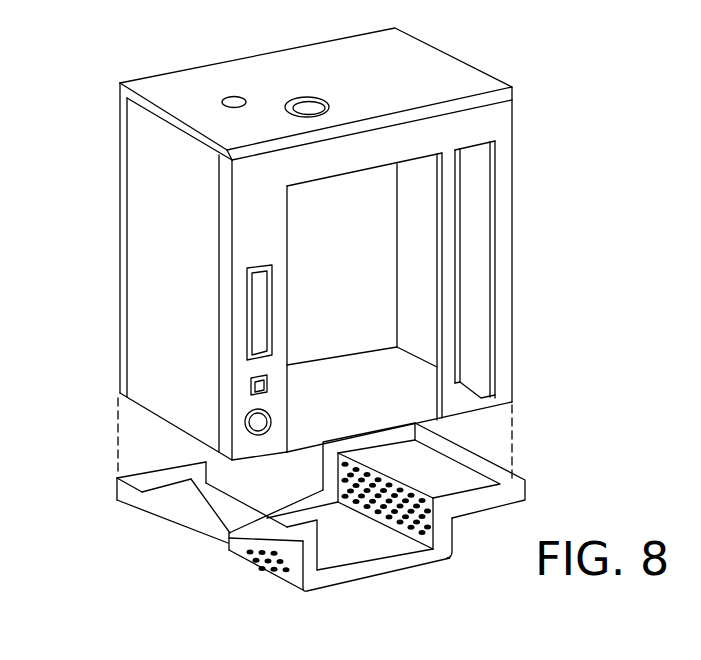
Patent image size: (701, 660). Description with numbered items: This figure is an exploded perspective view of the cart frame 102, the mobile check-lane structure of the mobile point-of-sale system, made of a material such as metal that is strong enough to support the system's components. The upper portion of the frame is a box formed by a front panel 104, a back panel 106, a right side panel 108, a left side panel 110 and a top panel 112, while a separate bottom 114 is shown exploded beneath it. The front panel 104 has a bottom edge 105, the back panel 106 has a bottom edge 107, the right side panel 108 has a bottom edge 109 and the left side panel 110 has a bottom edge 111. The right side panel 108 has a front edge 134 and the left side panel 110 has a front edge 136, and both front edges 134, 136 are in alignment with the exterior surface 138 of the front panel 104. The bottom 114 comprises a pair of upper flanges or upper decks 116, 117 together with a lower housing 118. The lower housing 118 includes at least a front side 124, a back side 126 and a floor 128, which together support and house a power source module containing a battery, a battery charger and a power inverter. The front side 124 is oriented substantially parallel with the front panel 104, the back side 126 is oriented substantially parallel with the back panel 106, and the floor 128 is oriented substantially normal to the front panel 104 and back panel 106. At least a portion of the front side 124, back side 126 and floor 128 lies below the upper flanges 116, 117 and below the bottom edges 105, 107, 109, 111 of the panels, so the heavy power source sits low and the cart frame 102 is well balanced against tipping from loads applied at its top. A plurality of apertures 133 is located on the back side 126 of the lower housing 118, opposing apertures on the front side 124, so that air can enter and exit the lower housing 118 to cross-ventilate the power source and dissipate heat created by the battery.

The cart frame 102 is at (108, 149).
The front panel 104 is at (162, 331).
The bottom edge 105 is at (158, 422).
The back panel 106 is at (420, 345).
The bottom edge 107 is at (397, 348).
The right side panel 108 is at (494, 123).
The bottom edge 109 is at (518, 412).
The left side panel 110 is at (310, 336).
The bottom edge 111 is at (343, 355).
The top panel 112 is at (418, 63).
The bottom 114 is at (413, 574).
The upper flange 116 is at (478, 478).
The upper flange 117 is at (228, 517).
The lower housing 118 is at (376, 568).
The front side 124 is at (270, 572).
The back side 126 is at (392, 535).
The floor 128 is at (328, 558).
The apertures 133 is at (384, 469).
The front edge 134 is at (227, 253).
The front edge 136 is at (125, 232).
The exterior surface 138 is at (165, 365).